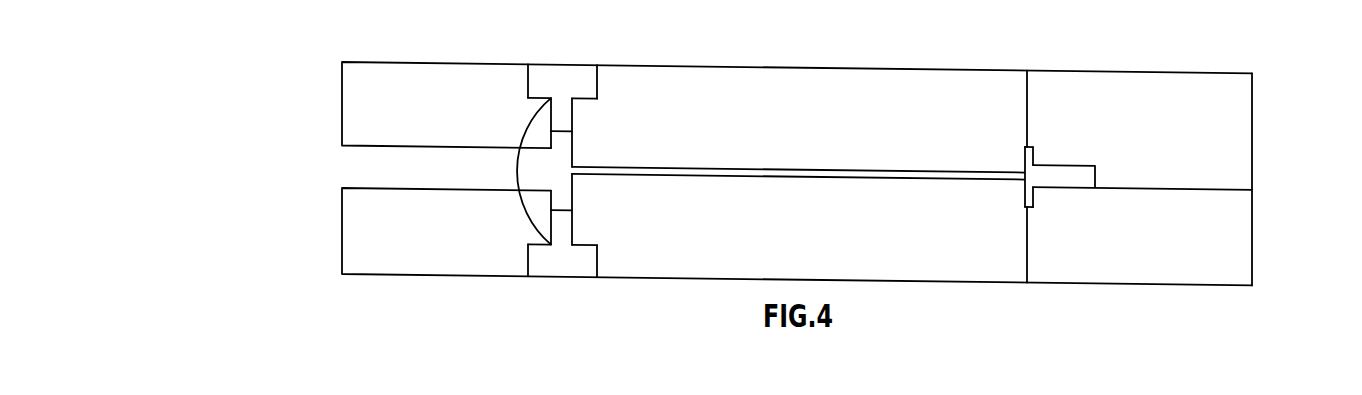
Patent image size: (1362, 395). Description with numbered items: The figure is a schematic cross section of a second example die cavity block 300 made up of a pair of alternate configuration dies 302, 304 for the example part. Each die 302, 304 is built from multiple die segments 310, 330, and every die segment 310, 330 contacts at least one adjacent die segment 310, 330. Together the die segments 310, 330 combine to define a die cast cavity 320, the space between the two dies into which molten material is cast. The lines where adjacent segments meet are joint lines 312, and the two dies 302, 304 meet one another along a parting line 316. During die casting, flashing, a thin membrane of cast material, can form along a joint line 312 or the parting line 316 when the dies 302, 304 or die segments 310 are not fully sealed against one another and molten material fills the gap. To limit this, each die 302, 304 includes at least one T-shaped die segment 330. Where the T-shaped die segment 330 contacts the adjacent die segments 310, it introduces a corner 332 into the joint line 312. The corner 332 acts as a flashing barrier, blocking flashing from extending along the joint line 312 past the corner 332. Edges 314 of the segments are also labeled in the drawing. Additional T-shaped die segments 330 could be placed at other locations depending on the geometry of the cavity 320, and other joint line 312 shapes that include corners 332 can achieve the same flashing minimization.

The structure assembly 300 is at (282, 106).
The die 302 is at (342, 97).
The die 304 is at (342, 242).
The die segment 310 is at (423, 90).
The joint line 312 is at (528, 88).
The step edges 314 is at (573, 128).
The parting line 316 is at (1148, 188).
The die cast cavity 320 is at (357, 172).
The T-shaped die segment 330 is at (564, 83).
The corner 332 is at (572, 100).